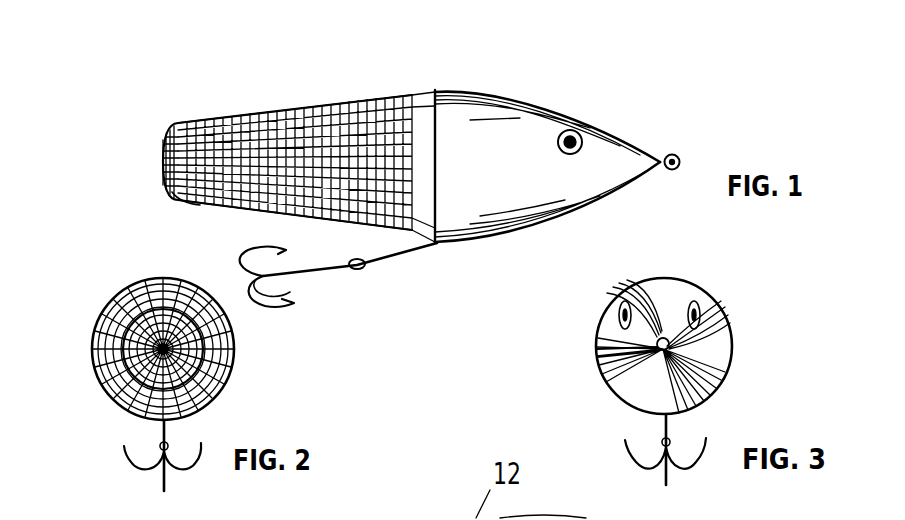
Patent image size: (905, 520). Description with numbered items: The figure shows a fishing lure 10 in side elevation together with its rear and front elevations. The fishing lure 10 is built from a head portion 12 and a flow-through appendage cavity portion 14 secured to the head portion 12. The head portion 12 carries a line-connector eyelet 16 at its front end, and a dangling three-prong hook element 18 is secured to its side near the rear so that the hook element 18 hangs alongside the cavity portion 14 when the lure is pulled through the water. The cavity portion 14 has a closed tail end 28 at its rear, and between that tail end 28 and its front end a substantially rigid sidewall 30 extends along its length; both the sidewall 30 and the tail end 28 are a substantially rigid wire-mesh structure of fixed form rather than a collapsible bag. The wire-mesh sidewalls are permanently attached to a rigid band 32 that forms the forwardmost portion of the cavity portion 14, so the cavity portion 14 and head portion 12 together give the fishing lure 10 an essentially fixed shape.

In FIG. 1, the fishing lure 10 is at (575, 82).
In FIG. 1, the head portion 12 is at (472, 118).
In FIG. 3, the head portion 12 is at (680, 292).
In FIG. 1, the flow-through appendage cavity portion 14 is at (302, 107).
In FIG. 2, the flow-through appendage cavity portion 14 is at (133, 305).
In FIG. 1, the line-connector eyelet 16 is at (682, 156).
In FIG. 1, the three-prong hook element 18 is at (278, 310).
In FIG. 1, the tail end 28 is at (163, 148).
In FIG. 1, the sidewall 30 is at (200, 207).
In FIG. 2, the sidewall 30 is at (106, 386).
In FIG. 1, the rigid band 32 is at (425, 137).